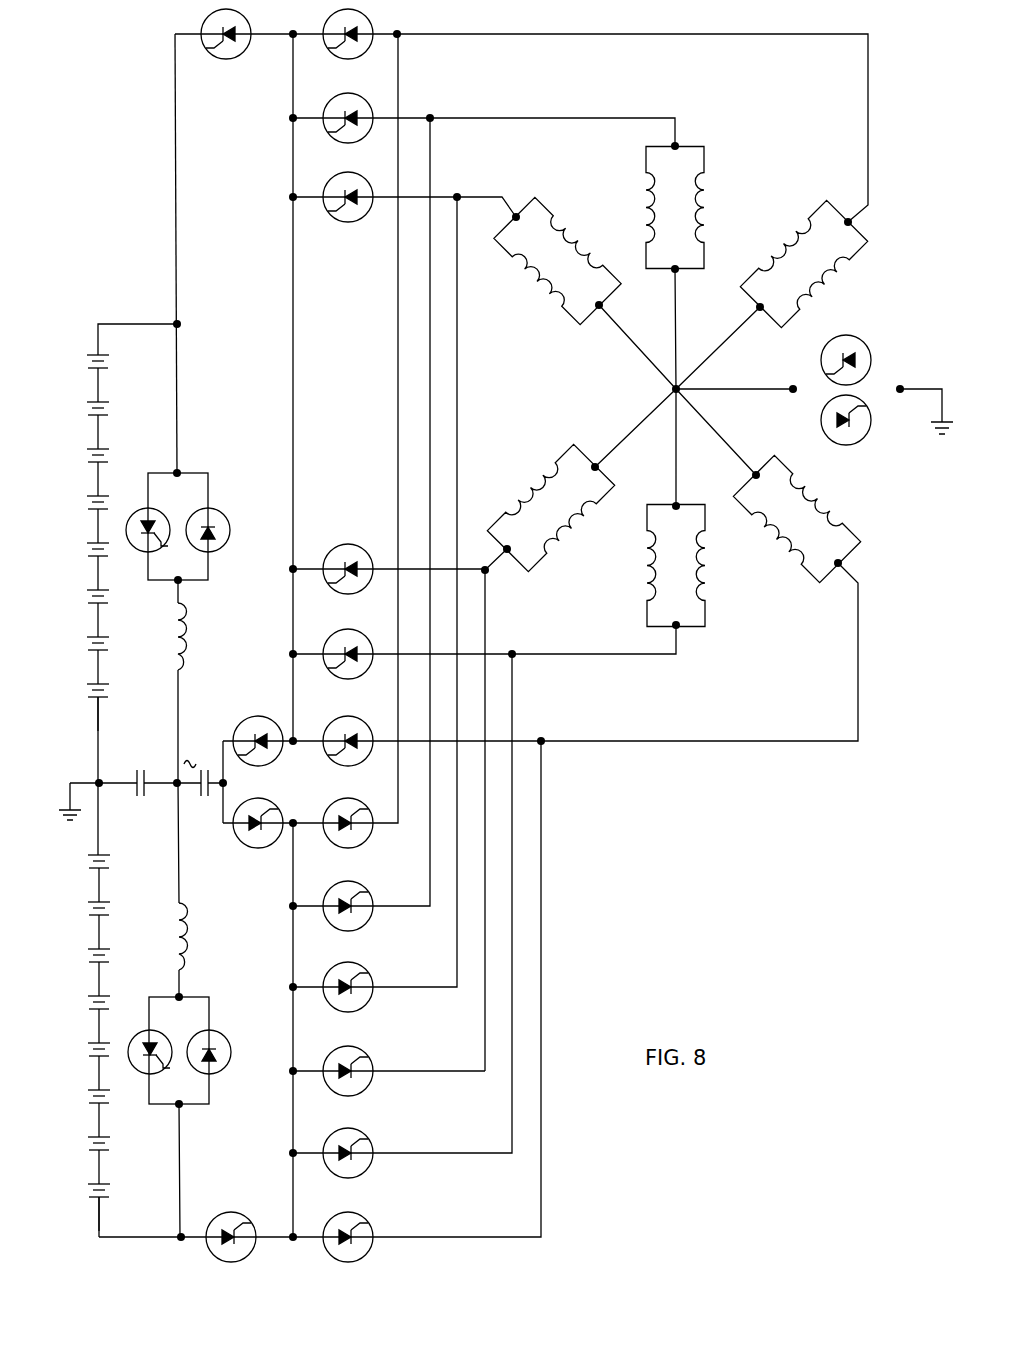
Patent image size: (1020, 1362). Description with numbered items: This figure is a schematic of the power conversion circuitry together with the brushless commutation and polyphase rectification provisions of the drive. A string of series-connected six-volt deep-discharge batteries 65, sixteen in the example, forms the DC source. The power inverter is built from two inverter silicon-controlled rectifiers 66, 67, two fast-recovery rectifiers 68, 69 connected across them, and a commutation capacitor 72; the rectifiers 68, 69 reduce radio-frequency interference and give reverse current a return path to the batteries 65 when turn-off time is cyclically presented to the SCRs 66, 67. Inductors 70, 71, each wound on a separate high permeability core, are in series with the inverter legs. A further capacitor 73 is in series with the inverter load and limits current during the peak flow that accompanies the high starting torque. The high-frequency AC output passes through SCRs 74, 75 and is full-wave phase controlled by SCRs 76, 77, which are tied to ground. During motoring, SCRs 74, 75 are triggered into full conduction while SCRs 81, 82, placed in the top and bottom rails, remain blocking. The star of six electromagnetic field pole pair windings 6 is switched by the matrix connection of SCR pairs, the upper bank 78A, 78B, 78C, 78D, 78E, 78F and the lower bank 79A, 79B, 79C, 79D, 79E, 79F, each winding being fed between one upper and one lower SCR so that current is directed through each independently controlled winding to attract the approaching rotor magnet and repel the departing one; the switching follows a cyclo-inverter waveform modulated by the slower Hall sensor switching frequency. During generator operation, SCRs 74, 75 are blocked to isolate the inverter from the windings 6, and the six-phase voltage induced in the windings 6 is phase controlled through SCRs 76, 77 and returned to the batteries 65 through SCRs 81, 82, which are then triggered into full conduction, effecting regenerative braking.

The electromagnetic field pole pair winding 6 is at (703, 202).
The battery 65 is at (108, 368).
The inverter silicon-controlled rectifier 66 is at (136, 506).
The inverter silicon-controlled rectifier 67 is at (135, 1035).
The fast-recovery rectifier 68 is at (216, 512).
The fast-recovery rectifier 69 is at (218, 1040).
The inductor 70 is at (184, 633).
The inductor 71 is at (185, 930).
The commutation capacitor 72 is at (138, 752).
The capacitor 73 is at (200, 795).
The SCR 74 is at (246, 727).
The SCR 75 is at (246, 836).
The SCR 76 is at (838, 342).
The SCR 77 is at (845, 443).
The SCR 78A is at (350, 57).
The SCR 78B is at (348, 141).
The SCR 78C is at (346, 220).
The SCR 78D is at (346, 546).
The SCR 78E is at (346, 631).
The SCR 78F is at (346, 718).
The SCR 79A is at (356, 845).
The SCR 79B is at (364, 920).
The SCR 79C is at (360, 970).
The SCR 79D is at (362, 1052).
The SCR 79E is at (358, 1132).
The SCR 79F is at (360, 1216).
The SCR 81 is at (238, 56).
The SCR 82 is at (222, 1222).